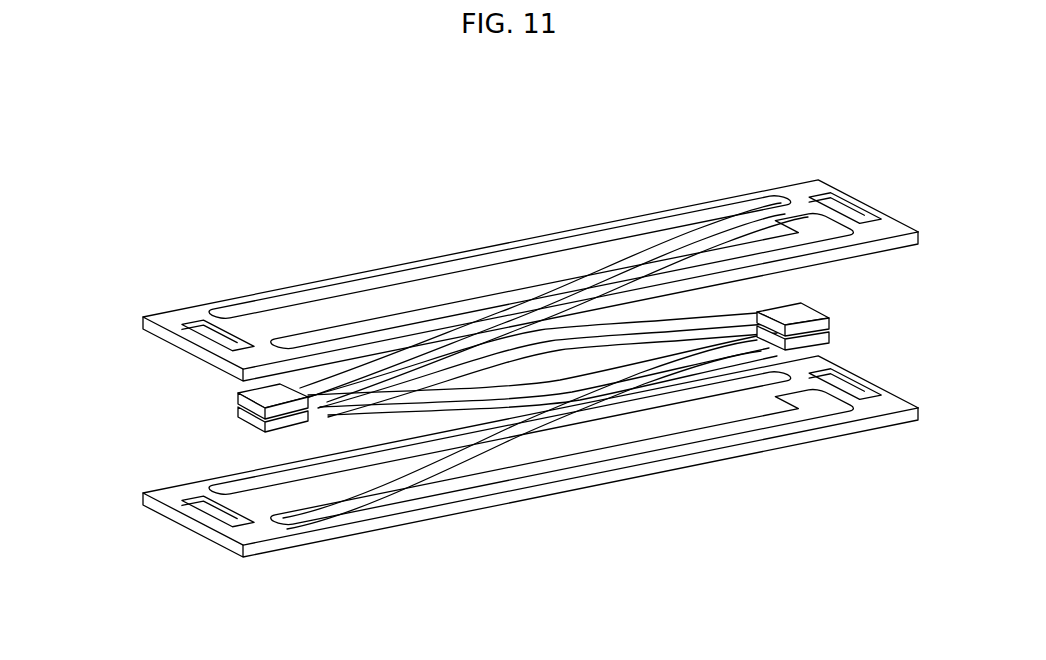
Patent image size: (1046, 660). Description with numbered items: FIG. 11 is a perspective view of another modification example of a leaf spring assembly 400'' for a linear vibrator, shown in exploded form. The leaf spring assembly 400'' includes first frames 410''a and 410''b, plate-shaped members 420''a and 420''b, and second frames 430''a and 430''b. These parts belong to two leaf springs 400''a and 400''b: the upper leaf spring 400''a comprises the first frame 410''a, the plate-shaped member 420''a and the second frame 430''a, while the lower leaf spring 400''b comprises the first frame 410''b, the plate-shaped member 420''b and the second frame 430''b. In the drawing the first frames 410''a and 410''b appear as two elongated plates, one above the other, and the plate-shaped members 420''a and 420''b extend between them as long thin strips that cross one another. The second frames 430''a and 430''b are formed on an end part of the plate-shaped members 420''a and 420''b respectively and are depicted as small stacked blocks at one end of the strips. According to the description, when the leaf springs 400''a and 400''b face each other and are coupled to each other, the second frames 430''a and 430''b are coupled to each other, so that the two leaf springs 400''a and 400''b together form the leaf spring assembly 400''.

The leaf spring assembly 400'' is at (506, 332).
The leaf spring 400''a is at (504, 291).
The leaf spring 400''b is at (532, 473).
The first frame 410''a is at (530, 280).
The first frame 410''b is at (530, 456).
The plate-shaped member 420''a is at (554, 291).
The plate-shaped member 420''b is at (530, 442).
The second frame 430''a is at (847, 305).
The second frame 430''b is at (849, 350).